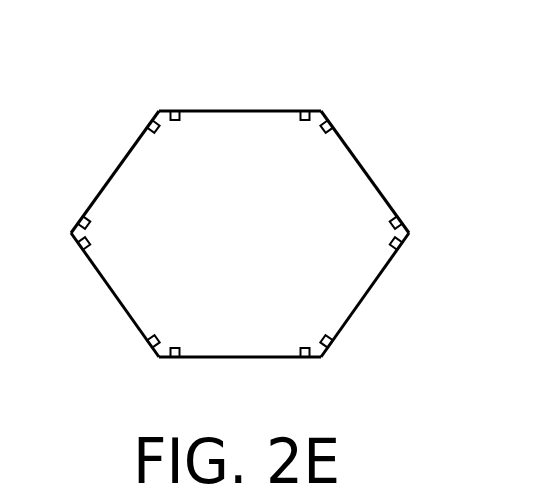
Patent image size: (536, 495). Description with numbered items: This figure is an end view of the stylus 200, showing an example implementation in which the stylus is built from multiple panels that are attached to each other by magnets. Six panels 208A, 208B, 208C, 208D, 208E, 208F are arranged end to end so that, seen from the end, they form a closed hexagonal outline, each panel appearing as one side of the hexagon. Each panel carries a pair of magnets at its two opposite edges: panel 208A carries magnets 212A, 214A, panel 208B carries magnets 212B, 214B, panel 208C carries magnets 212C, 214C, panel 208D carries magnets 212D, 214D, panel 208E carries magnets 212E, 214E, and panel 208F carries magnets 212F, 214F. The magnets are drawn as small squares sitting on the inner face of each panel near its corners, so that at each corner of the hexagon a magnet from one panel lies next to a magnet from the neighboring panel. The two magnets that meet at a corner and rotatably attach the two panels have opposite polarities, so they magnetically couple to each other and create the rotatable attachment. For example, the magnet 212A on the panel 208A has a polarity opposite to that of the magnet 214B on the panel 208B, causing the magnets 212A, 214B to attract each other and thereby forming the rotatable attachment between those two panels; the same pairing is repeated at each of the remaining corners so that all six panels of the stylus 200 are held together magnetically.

The stylus 200 is at (128, 78).
The panel 208A is at (238, 110).
The panel 208B is at (365, 168).
The panel 208C is at (366, 296).
The panel 208D is at (240, 358).
The panel 208E is at (114, 297).
The panel 208F is at (113, 175).
The magnet 212A is at (300, 121).
The magnet 212B is at (390, 224).
The magnet 212C is at (323, 337).
The magnet 212D is at (176, 348).
The magnet 212E is at (90, 242).
The magnet 212F is at (156, 133).
The magnet 214A is at (175, 121).
The magnet 214B is at (323, 133).
The magnet 214C is at (390, 244).
The magnet 214D is at (303, 348).
The magnet 214E is at (158, 336).
The magnet 214F is at (91, 222).